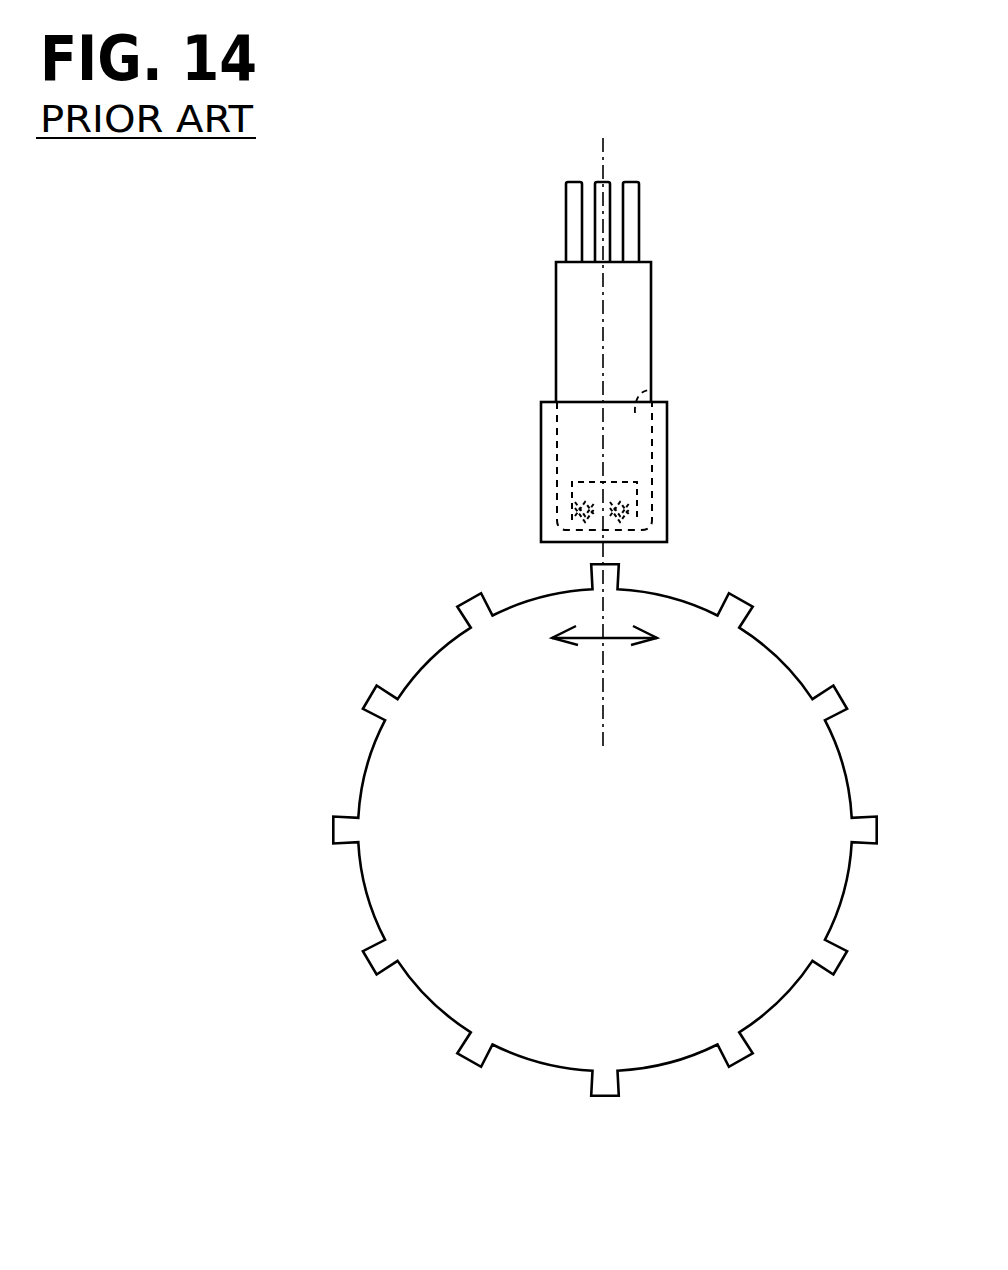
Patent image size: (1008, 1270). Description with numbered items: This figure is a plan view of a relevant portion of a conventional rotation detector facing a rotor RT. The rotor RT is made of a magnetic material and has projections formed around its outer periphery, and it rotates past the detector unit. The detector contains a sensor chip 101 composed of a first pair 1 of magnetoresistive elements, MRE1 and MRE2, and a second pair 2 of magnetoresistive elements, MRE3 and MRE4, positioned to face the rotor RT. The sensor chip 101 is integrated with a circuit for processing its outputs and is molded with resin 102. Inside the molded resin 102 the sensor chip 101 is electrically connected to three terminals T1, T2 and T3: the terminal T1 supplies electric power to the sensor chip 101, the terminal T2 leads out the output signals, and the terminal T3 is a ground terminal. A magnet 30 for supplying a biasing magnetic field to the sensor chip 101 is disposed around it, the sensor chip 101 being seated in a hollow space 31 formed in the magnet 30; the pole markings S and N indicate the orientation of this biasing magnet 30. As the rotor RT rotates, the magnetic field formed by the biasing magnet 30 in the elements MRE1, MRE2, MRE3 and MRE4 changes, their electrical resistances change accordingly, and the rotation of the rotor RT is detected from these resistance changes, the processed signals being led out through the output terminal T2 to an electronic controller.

The rotor RT is at (778, 652).
The molded resin 102 is at (651, 283).
The terminal T1 is at (572, 182).
The output terminal T2 is at (598, 182).
The ground terminal T3 is at (636, 182).
The magnet 30 is at (667, 432).
The hollow space 31 is at (650, 390).
The sensor chip 101 is at (637, 482).
The magnetoresistive element MRE1 is at (560, 506).
The magnetoresistive element MRE2 is at (575, 527).
The magnetoresistive element MRE3 is at (652, 528).
The magnetoresistive element MRE4 is at (557, 513).
The pair of magnetoresistive elements 1 is at (410, 465).
The pair of magnetoresistive elements 2 is at (806, 497).
The south pole S is at (508, 392).
The north pole N is at (516, 567).